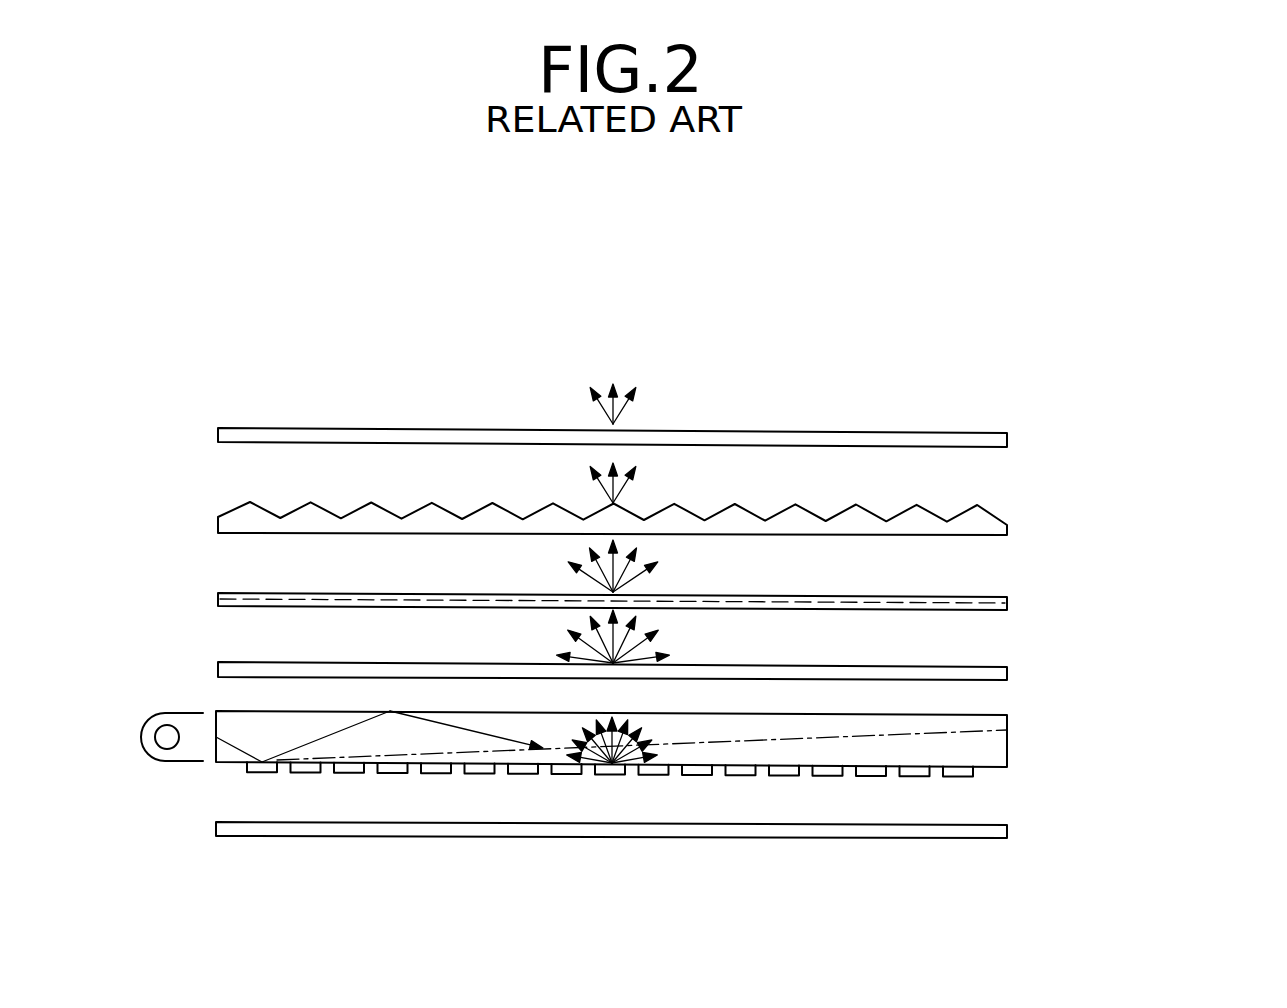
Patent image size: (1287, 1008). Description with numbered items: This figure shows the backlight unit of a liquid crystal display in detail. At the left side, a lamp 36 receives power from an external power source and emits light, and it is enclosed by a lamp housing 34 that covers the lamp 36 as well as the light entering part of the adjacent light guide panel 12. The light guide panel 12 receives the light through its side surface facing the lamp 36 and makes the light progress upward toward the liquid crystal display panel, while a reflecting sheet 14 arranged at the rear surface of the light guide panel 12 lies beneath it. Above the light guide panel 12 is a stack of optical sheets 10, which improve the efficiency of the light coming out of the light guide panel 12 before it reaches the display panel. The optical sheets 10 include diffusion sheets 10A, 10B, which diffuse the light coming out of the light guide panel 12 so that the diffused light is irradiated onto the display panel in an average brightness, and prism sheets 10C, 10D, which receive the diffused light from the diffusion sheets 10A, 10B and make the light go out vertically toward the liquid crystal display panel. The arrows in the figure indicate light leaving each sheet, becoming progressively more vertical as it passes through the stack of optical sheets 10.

The optical sheets 10 is at (1152, 440).
The diffusion sheet 10A is at (1010, 673).
The diffusion sheet 10B is at (1010, 603).
The prism sheet 10C is at (1010, 528).
The prism sheet 10D is at (1010, 439).
The light guide panel 12 is at (223, 763).
The reflecting sheet 14 is at (282, 828).
The lamp housing 34 is at (148, 722).
The lamp 36 is at (157, 760).